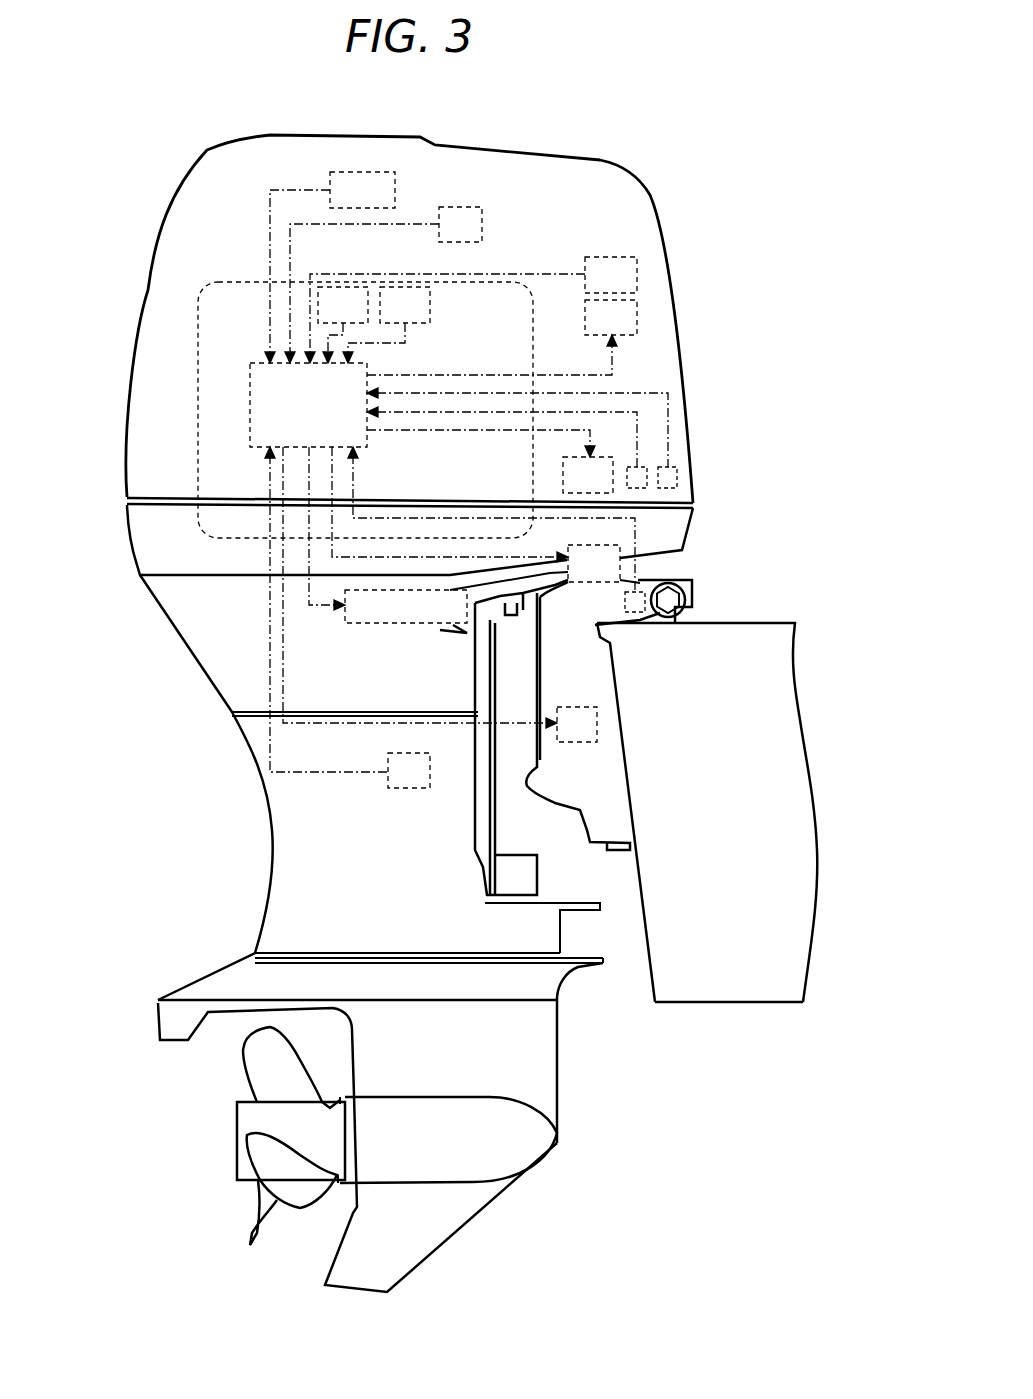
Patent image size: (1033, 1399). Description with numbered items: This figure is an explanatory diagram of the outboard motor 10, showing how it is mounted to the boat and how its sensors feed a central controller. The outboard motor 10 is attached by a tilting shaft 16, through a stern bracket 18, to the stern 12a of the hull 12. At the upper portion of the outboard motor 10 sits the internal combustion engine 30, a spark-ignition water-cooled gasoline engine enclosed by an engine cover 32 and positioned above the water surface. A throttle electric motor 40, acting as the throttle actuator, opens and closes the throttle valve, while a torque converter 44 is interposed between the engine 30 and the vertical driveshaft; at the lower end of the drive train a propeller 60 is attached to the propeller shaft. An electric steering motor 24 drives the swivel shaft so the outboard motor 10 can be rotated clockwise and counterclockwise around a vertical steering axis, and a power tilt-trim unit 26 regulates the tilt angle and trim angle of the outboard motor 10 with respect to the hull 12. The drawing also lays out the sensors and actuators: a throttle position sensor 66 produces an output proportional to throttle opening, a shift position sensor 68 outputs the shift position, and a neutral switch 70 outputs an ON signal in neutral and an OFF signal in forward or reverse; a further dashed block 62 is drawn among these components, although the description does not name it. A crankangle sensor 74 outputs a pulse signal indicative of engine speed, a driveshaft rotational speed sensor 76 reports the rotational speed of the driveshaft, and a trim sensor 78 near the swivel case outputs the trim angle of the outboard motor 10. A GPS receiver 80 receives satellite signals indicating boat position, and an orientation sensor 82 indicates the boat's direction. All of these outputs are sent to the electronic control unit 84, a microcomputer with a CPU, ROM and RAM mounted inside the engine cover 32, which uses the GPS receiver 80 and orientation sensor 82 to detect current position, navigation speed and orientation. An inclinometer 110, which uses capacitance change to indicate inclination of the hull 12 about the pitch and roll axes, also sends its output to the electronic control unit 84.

The outboard motor 10 is at (646, 176).
The hull 12 is at (695, 1002).
The stern 12a is at (668, 1005).
The tilting shaft 16 is at (670, 600).
The stern bracket 18 is at (607, 805).
The electric steering motor 24 is at (594, 563).
The power tilt-trim unit 26 is at (597, 722).
The internal combustion engine 30 is at (198, 323).
The engine cover 32 is at (153, 242).
The throttle electric motor 40 is at (611, 317).
The torque converter 44 is at (402, 623).
The propeller 60 is at (258, 1208).
The trim actuator 62 is at (588, 475).
The throttle position sensor 66 is at (611, 275).
The shift position sensor 68 is at (640, 488).
The neutral switch 70 is at (677, 475).
The crankangle sensor 74 is at (483, 215).
The driveshaft rotational speed sensor 76 is at (408, 788).
The trim sensor 78 is at (640, 583).
The GPS receiver 80 is at (343, 305).
The orientation sensor 82 is at (405, 305).
The electronic control unit 84 is at (250, 403).
The inclinometer 110 is at (362, 190).